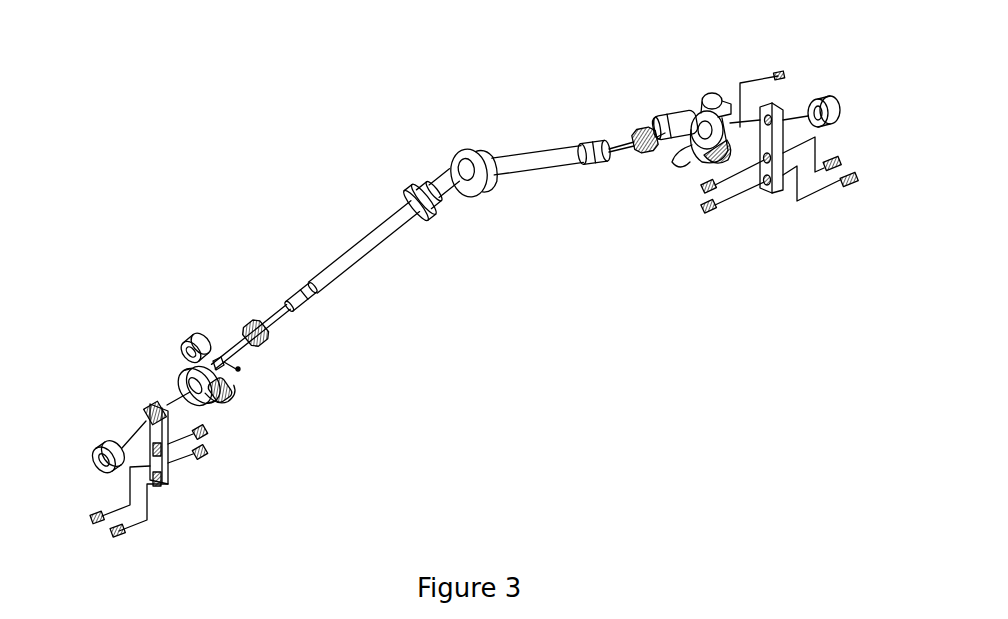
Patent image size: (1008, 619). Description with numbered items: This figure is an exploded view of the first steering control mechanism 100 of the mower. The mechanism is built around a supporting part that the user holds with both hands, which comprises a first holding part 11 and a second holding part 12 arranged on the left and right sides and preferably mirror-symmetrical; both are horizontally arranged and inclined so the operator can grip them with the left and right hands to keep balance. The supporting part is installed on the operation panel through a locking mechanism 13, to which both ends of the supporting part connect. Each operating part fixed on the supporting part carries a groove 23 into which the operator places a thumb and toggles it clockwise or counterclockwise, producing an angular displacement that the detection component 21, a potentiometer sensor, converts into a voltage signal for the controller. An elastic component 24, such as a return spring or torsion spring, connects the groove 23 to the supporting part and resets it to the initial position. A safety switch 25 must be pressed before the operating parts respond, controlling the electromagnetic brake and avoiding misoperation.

The first steering control mechanism 100 is at (373, 126).
The first holding part 11 is at (353, 241).
The second holding part 12 is at (525, 165).
The locking mechanism 13 is at (766, 187).
The detection component 21 is at (222, 378).
The groove 23 is at (188, 343).
The elastic component 24 is at (268, 335).
The safety switch 25 is at (236, 401).